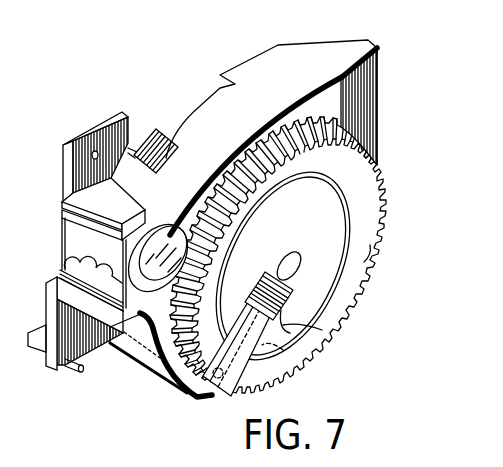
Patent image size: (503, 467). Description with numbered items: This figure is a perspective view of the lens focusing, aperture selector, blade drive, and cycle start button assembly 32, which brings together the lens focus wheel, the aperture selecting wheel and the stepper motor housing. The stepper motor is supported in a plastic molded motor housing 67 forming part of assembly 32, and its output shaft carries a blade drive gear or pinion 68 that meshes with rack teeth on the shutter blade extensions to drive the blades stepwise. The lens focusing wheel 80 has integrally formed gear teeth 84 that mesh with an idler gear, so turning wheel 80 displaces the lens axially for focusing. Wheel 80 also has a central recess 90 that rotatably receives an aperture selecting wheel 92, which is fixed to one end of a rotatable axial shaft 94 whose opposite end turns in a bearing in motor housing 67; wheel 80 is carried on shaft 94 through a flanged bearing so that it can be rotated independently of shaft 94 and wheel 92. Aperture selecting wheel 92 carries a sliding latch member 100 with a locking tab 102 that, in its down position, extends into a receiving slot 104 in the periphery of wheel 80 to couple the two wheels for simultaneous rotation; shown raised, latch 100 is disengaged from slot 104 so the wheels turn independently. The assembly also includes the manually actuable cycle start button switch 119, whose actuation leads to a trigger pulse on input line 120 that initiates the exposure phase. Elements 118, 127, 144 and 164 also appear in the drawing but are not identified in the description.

The lens focusing, aperture selector, blade drive, and cycle start button assembly 32 is at (401, 58).
The motor housing 67 is at (262, 54).
The blade drive gear or pinion 68 is at (150, 170).
The camera cycle start button switch 119 is at (167, 227).
The lens focusing wheel 80 is at (372, 183).
The gear teeth 84 is at (346, 268).
The opening 127 is at (283, 266).
The central recess 90 is at (364, 262).
The aperture selecting wheel 92 is at (322, 330).
The input line 120 is at (300, 315).
The locking tab 102 is at (283, 350).
The slide bar 118 is at (237, 336).
The receiving slot 104 is at (216, 388).
The ribbed cylinder 164 is at (287, 293).
The sliding latch member 100 is at (275, 274).
The hub 144 is at (302, 265).
The rotatable axial shaft 94 is at (288, 258).